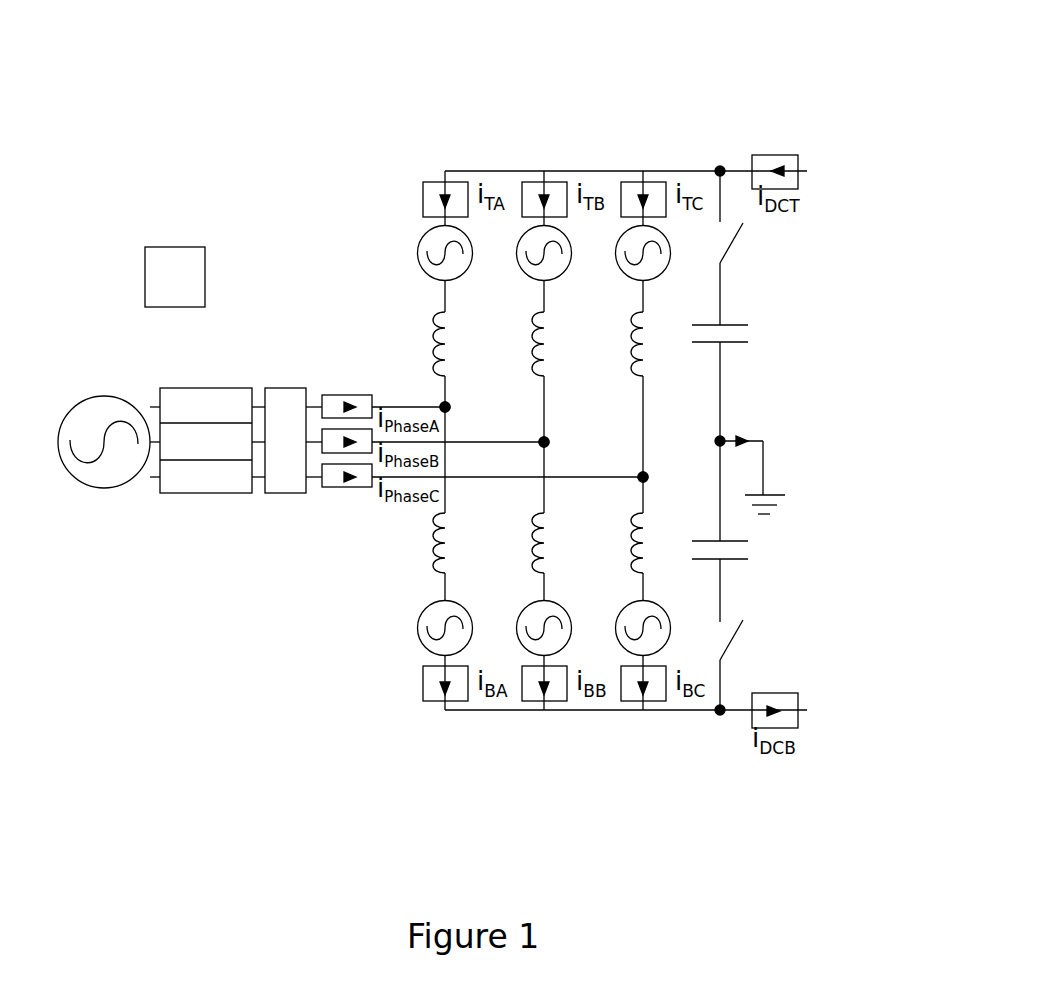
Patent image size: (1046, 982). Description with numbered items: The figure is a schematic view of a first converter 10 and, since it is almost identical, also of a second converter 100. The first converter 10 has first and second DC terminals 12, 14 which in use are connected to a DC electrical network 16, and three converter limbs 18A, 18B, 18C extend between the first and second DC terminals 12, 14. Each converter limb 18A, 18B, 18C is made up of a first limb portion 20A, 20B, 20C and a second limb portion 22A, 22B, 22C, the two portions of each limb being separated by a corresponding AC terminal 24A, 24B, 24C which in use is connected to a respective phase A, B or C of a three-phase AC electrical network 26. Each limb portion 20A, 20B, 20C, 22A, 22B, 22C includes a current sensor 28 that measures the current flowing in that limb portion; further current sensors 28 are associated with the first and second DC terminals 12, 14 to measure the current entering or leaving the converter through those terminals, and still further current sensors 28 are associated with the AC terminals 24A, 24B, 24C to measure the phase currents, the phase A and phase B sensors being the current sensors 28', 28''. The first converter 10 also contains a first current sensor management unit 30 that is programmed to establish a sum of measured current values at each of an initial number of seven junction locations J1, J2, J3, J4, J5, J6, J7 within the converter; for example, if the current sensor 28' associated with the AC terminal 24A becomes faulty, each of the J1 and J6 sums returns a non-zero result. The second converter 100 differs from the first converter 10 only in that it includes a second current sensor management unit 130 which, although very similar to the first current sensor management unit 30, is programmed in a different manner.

The first converter 10 is at (138, 88).
The second converter 100 is at (187, 118).
The first DC terminal 12 is at (723, 168).
The second DC terminal 14 is at (716, 715).
The DC electrical network 16 is at (813, 266).
The converter limb 18A is at (447, 87).
The converter limb 18B is at (544, 87).
The converter limb 18C is at (642, 87).
The first limb portion 20A is at (404, 291).
The first limb portion 20B is at (507, 287).
The first limb portion 20C is at (606, 287).
The second limb portion 22A is at (405, 600).
The second limb portion 22B is at (507, 598).
The second limb portion 22C is at (606, 598).
The AC terminal 24A is at (448, 405).
The AC terminal 24B is at (547, 440).
The AC terminal 24C is at (648, 475).
The three-phase AC electrical network 26 is at (131, 371).
The current sensor 28 is at (594, 444).
The phase A current sensor 28' is at (313, 372).
The phase B current sensor 28'' is at (300, 496).
The first current sensor management unit 30 is at (127, 247).
The second current sensor management unit 130 is at (175, 258).
The junction location J1 is at (443, 405).
The junction location J2 is at (542, 442).
The junction location J3 is at (642, 475).
The junction location J4 is at (716, 167).
The junction location J5 is at (724, 707).
The junction location J6 is at (280, 397).
The junction location J7 is at (717, 448).